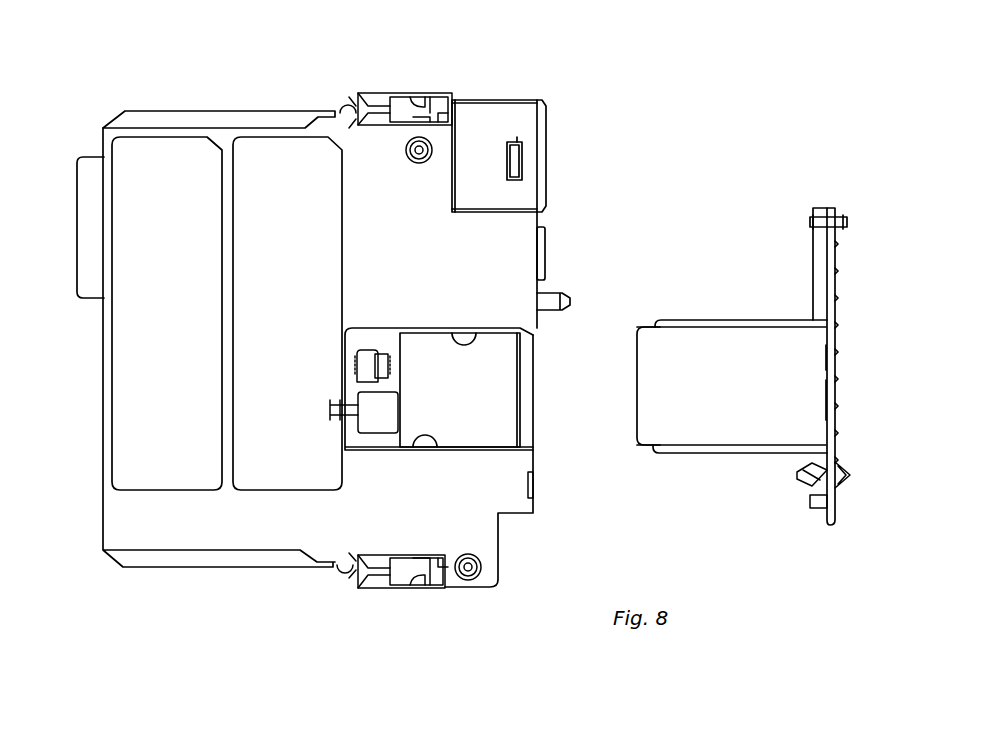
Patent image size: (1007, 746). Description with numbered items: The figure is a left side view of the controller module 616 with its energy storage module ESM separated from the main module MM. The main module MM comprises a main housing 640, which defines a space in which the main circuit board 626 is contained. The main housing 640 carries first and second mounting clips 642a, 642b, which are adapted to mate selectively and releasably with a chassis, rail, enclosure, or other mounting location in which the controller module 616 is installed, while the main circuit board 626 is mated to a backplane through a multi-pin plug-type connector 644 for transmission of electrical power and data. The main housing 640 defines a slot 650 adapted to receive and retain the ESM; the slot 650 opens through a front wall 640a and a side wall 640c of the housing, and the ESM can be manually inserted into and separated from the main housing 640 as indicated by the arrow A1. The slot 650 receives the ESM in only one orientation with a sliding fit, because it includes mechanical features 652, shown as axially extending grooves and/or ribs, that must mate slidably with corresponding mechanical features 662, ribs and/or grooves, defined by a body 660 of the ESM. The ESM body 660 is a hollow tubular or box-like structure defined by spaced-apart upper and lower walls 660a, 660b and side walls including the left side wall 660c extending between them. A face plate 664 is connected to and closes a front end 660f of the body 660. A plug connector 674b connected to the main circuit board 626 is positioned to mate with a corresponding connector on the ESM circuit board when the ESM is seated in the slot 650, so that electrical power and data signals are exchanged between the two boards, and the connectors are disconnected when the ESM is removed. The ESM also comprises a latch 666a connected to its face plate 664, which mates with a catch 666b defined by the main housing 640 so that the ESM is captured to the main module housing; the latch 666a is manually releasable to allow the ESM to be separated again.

The controller module 616 is at (557, 95).
The multi-pin plug-type connector 644 is at (90, 167).
The main housing 640 is at (168, 168).
The first mounting clip 642a is at (375, 95).
The second mounting clip 642b is at (373, 588).
The front wall 640a is at (548, 165).
The side wall 640c is at (422, 218).
The slot 650 is at (502, 418).
The mechanical features 652 is at (471, 330).
The plug connector 674b is at (370, 350).
The main circuit board 626 is at (392, 345).
The catch 666b is at (528, 490).
The ESM body 660 is at (687, 345).
The upper wall 660a is at (648, 320).
The lower wall 660b is at (642, 450).
The left side wall 660c is at (800, 403).
The front end 660f is at (825, 357).
The mechanical features 662 is at (797, 320).
The face plate 664 is at (836, 278).
The latch 666a is at (803, 490).
The main module MM is at (289, 108).
The energy storage module ESM is at (722, 318).
The arrow A1 is at (622, 373).